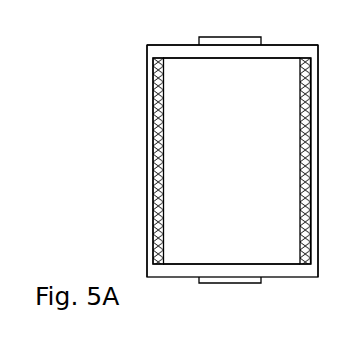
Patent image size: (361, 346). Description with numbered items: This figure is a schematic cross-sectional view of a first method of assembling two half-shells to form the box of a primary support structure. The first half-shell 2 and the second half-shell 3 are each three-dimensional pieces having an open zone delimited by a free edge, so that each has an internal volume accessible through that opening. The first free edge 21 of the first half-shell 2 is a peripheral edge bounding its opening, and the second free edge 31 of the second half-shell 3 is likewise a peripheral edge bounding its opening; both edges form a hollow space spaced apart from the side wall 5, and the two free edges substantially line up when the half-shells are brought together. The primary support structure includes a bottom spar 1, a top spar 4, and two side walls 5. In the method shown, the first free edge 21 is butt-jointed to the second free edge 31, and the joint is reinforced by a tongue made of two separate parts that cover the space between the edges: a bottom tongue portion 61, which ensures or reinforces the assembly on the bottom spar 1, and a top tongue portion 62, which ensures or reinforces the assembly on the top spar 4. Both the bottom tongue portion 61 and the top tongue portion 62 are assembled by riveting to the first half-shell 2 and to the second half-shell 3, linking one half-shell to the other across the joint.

The bottom spar 1 is at (181, 272).
The first half-shell 2 is at (316, 105).
The second half-shell 3 is at (147, 111).
The top spar 4 is at (185, 44).
The side wall 5 is at (152, 196).
The first free edge 21 is at (232, 45).
The second free edge 31 is at (232, 283).
The bottom tongue portion 61 is at (258, 284).
The top tongue portion 62 is at (255, 38).